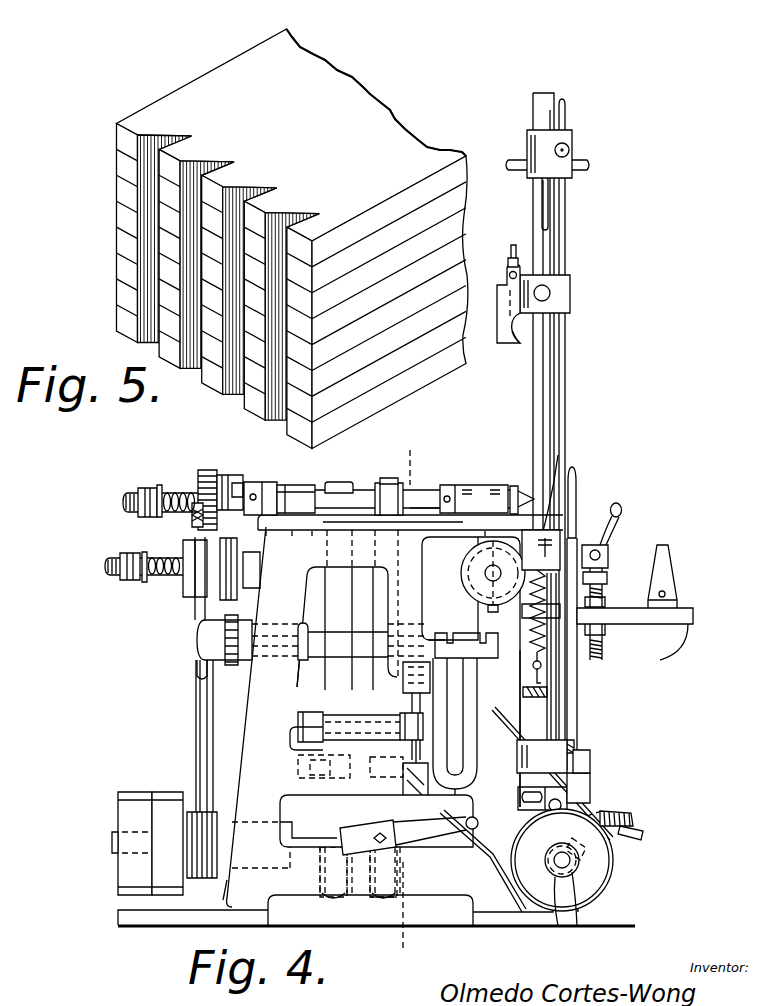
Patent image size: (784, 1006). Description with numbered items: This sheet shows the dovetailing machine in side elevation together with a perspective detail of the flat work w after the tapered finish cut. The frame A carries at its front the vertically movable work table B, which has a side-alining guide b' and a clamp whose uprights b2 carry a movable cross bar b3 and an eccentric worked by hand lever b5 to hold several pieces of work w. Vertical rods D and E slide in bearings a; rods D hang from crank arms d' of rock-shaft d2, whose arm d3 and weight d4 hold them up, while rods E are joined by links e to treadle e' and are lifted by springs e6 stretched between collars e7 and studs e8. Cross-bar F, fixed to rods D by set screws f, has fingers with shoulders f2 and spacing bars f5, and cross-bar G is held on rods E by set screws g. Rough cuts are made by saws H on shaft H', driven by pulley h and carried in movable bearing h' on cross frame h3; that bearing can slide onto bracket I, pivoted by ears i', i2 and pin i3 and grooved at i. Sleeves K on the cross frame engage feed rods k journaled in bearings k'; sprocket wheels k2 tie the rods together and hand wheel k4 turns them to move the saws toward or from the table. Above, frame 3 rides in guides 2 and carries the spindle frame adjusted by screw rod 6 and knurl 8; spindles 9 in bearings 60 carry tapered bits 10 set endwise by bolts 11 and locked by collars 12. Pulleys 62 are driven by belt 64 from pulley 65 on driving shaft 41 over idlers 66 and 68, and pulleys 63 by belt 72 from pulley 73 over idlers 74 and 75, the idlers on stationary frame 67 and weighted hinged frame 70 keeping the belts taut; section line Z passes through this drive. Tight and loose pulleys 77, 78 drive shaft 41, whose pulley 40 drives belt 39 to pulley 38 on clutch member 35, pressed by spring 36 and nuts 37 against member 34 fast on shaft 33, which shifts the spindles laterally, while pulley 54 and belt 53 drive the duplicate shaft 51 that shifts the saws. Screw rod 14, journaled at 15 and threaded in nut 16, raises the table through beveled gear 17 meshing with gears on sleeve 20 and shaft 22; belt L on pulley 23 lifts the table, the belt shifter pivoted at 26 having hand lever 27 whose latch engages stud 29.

In FIG. 5, the flat work w is at (371, 110).
In FIG. 4, the vertical rods D is at (532, 112).
In FIG. 4, the vertical rods E is at (568, 115).
In FIG. 4, the cross-bar G is at (588, 165).
In FIG. 4, the set screws g is at (570, 147).
In FIG. 4, the set screws f is at (551, 292).
In FIG. 4, the cross-bar F is at (497, 318).
In FIG. 4, the shoulders f2 is at (517, 340).
In FIG. 4, the adjustable edge guides f5 is at (508, 252).
In FIG. 4, the spindles 9 is at (412, 492).
In FIG. 4, the friction clutch member 34 is at (255, 482).
In FIG. 4, the collars 12 is at (290, 484).
In FIG. 4, the belt 64 is at (340, 480).
In FIG. 4, the belt pulleys 62 is at (378, 484).
In FIG. 4, the belt 72 is at (392, 478).
In FIG. 4, the section line Z is at (402, 710).
In FIG. 4, the belt pulleys 63 is at (445, 475).
In FIG. 4, the spindle bearings 60 is at (475, 484).
In FIG. 4, the dovetailing bits 10 is at (524, 490).
In FIG. 4, the belt pulley 38 is at (198, 482).
In FIG. 4, the adjusting bolts 11 is at (228, 476).
In FIG. 4, the friction clutch member 35 is at (238, 480).
In FIG. 4, the knurl 8 is at (191, 519).
In FIG. 4, the shaft 33 is at (122, 500).
In FIG. 4, the nuts 37 is at (142, 515).
In FIG. 4, the spring 36 is at (160, 488).
In FIG. 4, the shaft 51 is at (105, 568).
In FIG. 4, the hand wheel k4 is at (195, 640).
In FIG. 4, the sprocket wheels k2 is at (197, 676).
In FIG. 4, the belt 39 is at (200, 712).
In FIG. 4, the belt 53 is at (196, 735).
In FIG. 4, the movable frame 70 is at (298, 718).
In FIG. 4, the stationary frame 67 is at (296, 766).
In FIG. 4, the threaded feed rods k is at (347, 628).
In FIG. 4, the sleeves K is at (320, 672).
In FIG. 4, the bearings k' is at (285, 658).
In FIG. 4, the idler pulley 75 is at (382, 712).
In FIG. 4, the idler pulley 68 is at (290, 740).
In FIG. 4, the idler pulley 66 is at (282, 805).
In FIG. 4, the pulley 65 is at (342, 900).
In FIG. 4, the pulley 73 is at (380, 900).
In FIG. 4, the frame A is at (432, 900).
In FIG. 4, the pulley 40 is at (223, 880).
In FIG. 4, the loose pulley 78 is at (125, 790).
In FIG. 4, the tight pulley 77 is at (165, 790).
In FIG. 4, the driving shaft 41 is at (112, 845).
In FIG. 4, the pulley 54 is at (188, 870).
In FIG. 4, the screw rod 6 is at (270, 532).
In FIG. 4, the guides 2 is at (292, 532).
In FIG. 4, the horizontally adjustable frame 3 is at (312, 532).
In FIG. 4, the saws H is at (471, 672).
In FIG. 4, the belt pulley h is at (478, 576).
In FIG. 4, the movable bearing h' is at (481, 584).
In FIG. 4, the shaft H' is at (465, 585).
In FIG. 4, the cross frame h3 is at (435, 618).
In FIG. 4, the dovetailed groove i is at (465, 711).
In FIG. 4, the ear i' is at (427, 676).
In FIG. 4, the pin i3 is at (421, 704).
In FIG. 4, the idler pulley 74 is at (424, 745).
In FIG. 4, the bracket I is at (517, 672).
In FIG. 4, the collars e7 is at (552, 765).
In FIG. 4, the ear i2 is at (466, 790).
In FIG. 4, the rock-shaft d2 is at (474, 815).
In FIG. 4, the adjustable weight d4 is at (400, 852).
In FIG. 4, the arm d3 is at (430, 840).
In FIG. 4, the crank arms d' is at (483, 861).
In FIG. 4, the hand lever 27 is at (580, 476).
In FIG. 4, the studs e8 is at (563, 466).
In FIG. 4, the stud 29 is at (561, 540).
In FIG. 4, the bearings a is at (563, 560).
In FIG. 4, the hand lever b5 is at (622, 508).
In FIG. 4, the uprights b2 is at (610, 550).
In FIG. 4, the cross bar b3 is at (609, 567).
In FIG. 4, the springs e6 is at (604, 650).
In FIG. 4, the pivot 26 is at (560, 660).
In FIG. 4, the adjustable guide b' is at (676, 579).
In FIG. 4, the work table B is at (695, 618).
In FIG. 4, the belt L is at (597, 776).
In FIG. 4, the screw rod 14 is at (578, 755).
In FIG. 4, the nut 16 is at (585, 747).
In FIG. 4, the journal 15 is at (595, 795).
In FIG. 4, the links e is at (616, 806).
In FIG. 4, the beveled gear 17 is at (645, 822).
In FIG. 4, the treadle e' is at (638, 816).
In FIG. 4, the shaft 22 is at (590, 893).
In FIG. 4, the belt pulley 23 is at (612, 885).
In FIG. 4, the sleeve 20 is at (562, 880).